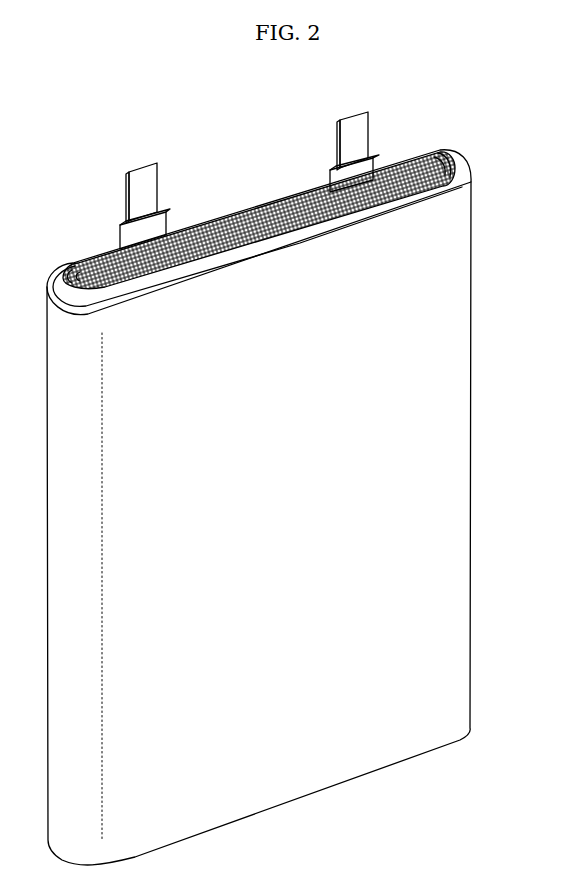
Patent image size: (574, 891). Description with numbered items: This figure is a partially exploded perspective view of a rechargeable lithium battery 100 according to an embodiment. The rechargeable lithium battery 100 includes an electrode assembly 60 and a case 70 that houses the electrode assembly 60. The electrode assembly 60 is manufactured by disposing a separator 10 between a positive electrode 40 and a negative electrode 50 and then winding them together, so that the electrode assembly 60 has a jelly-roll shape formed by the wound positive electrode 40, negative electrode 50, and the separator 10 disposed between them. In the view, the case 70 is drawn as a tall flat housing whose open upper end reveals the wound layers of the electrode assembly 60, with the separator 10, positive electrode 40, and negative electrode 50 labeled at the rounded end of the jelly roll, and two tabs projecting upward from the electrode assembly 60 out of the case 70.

The rechargeable lithium battery 100 is at (136, 112).
The separator 10 is at (438, 146).
The positive electrode 40 is at (447, 153).
The negative electrode 50 is at (423, 148).
The electrode assembly 60 is at (298, 169).
The case 70 is at (435, 472).